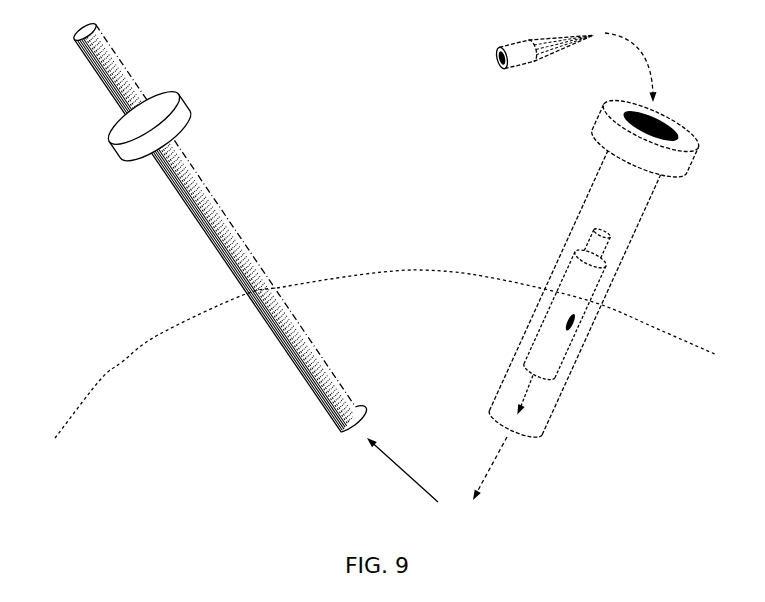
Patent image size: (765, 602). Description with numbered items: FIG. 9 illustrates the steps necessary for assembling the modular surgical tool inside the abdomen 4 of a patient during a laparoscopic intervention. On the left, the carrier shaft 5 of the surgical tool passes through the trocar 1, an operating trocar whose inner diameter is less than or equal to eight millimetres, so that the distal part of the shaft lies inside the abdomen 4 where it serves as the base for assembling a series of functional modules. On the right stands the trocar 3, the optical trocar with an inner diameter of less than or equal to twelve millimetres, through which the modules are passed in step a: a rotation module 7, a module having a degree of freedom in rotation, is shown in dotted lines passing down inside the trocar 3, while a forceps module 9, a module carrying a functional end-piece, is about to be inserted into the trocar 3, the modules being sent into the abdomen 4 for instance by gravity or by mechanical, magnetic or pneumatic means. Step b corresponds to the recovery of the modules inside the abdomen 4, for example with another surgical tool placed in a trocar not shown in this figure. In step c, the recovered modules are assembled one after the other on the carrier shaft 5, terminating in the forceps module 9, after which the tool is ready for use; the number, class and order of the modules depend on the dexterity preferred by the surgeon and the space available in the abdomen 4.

The trocar 1 is at (151, 126).
The trocar 3 is at (585, 272).
The abdomen 4 is at (386, 354).
The carrier shaft 5 is at (220, 225).
The rotation module 7 is at (564, 309).
The forceps module 9 is at (544, 63).
The step a is at (638, 67).
The step b is at (479, 485).
The step c is at (402, 459).